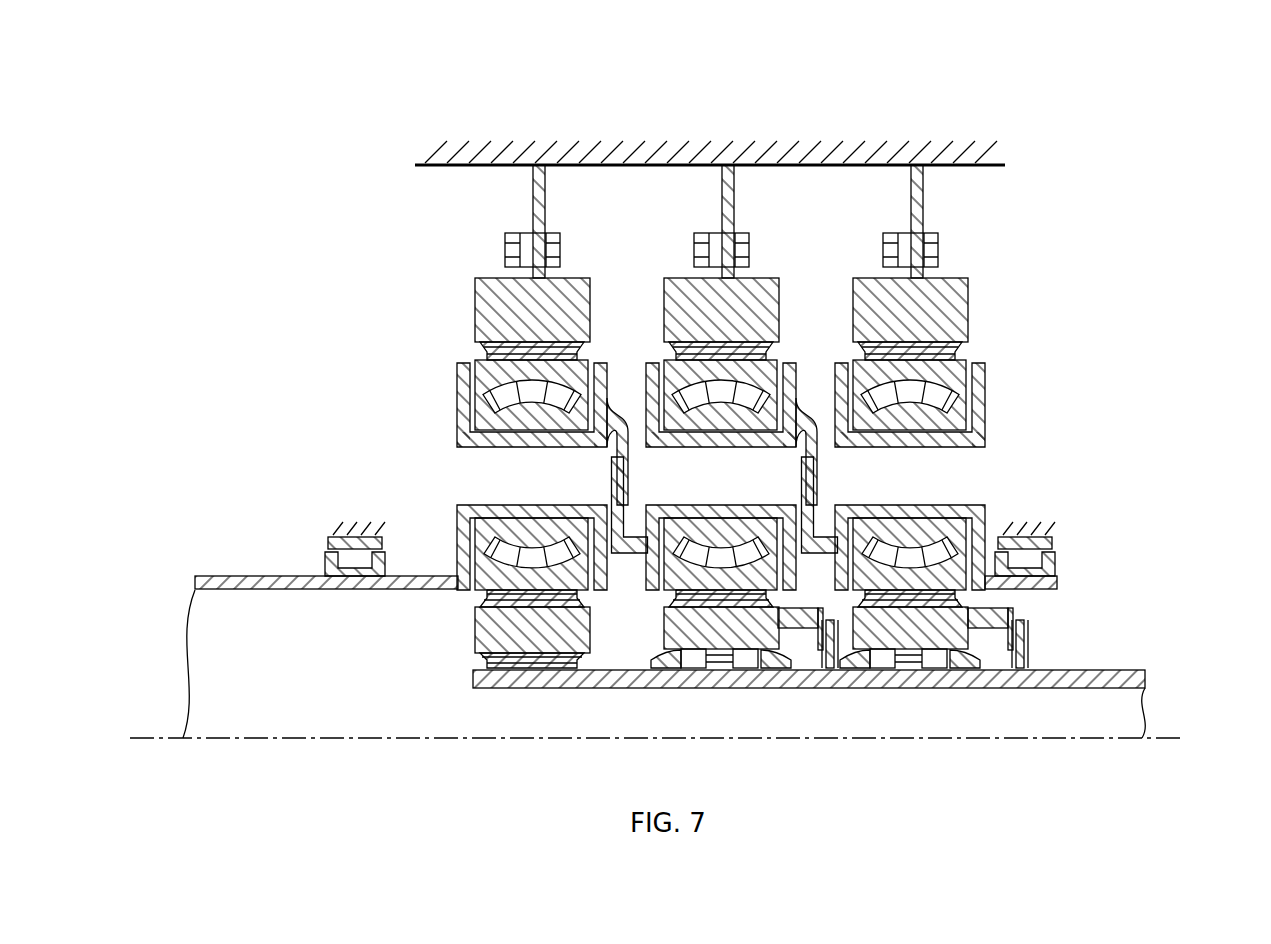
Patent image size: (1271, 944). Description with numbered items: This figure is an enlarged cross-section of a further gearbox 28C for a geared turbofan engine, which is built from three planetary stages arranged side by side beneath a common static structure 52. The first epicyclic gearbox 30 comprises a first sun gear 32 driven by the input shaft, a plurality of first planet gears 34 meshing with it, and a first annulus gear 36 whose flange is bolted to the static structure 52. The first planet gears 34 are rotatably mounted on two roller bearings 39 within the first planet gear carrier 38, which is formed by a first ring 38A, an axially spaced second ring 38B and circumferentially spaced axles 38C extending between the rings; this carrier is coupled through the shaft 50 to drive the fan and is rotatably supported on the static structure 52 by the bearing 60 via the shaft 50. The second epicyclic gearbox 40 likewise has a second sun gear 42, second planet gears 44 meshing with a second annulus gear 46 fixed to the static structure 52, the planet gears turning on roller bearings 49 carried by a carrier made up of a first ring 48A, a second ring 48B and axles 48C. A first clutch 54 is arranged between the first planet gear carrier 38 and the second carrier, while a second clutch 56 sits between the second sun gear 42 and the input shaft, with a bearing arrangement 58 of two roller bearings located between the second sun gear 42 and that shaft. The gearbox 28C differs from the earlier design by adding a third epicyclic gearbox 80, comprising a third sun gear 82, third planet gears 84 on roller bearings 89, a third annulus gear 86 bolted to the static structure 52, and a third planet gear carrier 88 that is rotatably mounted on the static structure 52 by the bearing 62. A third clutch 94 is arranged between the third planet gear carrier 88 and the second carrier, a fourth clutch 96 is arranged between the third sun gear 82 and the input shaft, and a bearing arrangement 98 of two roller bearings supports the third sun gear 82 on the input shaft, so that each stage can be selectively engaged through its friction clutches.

The gearbox 28C is at (1112, 275).
The first epicyclic gearbox 30 is at (490, 335).
The first sun gear 32 is at (495, 628).
The first planet gears 34 is at (486, 426).
The first annulus gear 36 is at (555, 318).
The first planet gear carrier 38 is at (490, 393).
The first ring 38A is at (462, 405).
The second ring 38B is at (600, 365).
The axles 38C is at (500, 440).
The planet gear bearing 39 is at (550, 400).
The second epicyclic gearbox 40 is at (730, 336).
The second sun gear 42 is at (745, 625).
The second planet gears 44 is at (746, 378).
The second annulus gear 46 is at (705, 305).
The first ring 48A is at (650, 392).
The second ring 48B is at (790, 385).
The axles 48C is at (742, 432).
The planet gear bearing 49 is at (742, 400).
The shaft 50 is at (280, 578).
The static structure 52 is at (968, 153).
The first clutch 54 is at (626, 480).
The second clutch 56 is at (795, 622).
The bearing arrangement 58 is at (697, 668).
The bearing 60 is at (396, 553).
The bearing 62 is at (1050, 546).
The third epicyclic gearbox 80 is at (945, 332).
The third sun gear 82 is at (935, 628).
The third planet gears 84 is at (943, 400).
The third annulus gear 86 is at (888, 296).
The third planet gear carrier 88 is at (986, 392).
The planet gear bearing 89 is at (928, 400).
The third clutch 94 is at (816, 480).
The fourth clutch 96 is at (1034, 600).
The bearing arrangement 98 is at (893, 668).